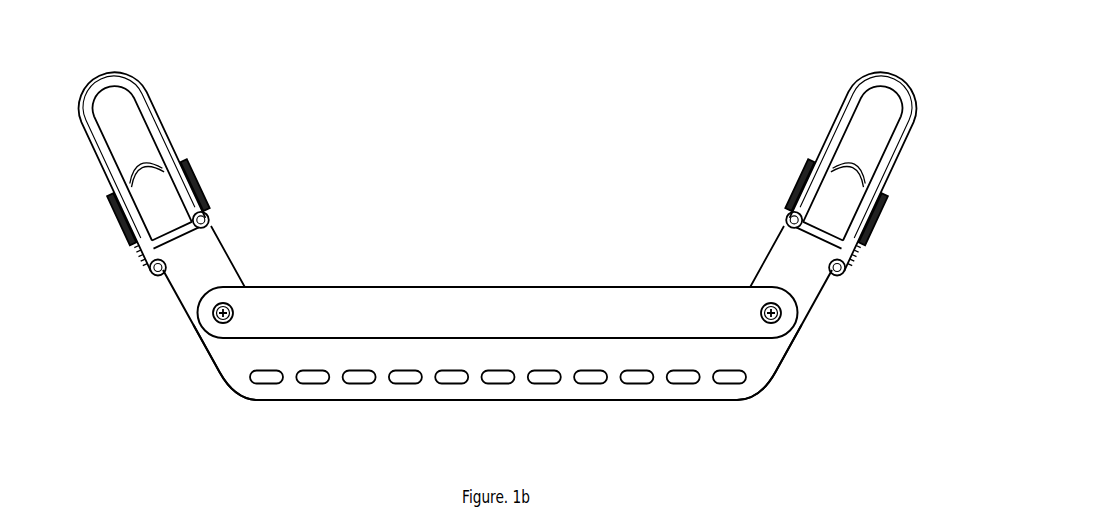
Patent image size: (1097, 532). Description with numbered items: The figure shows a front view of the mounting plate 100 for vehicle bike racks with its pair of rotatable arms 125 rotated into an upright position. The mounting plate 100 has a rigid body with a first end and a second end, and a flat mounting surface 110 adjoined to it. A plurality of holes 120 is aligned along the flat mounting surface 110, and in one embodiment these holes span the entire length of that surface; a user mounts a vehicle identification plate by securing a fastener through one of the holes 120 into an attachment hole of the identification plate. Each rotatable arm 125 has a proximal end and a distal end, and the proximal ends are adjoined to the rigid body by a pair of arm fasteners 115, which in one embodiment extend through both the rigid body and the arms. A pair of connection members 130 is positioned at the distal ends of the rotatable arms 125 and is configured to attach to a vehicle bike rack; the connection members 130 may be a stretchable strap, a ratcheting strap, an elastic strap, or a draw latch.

The mounting plate 100 is at (494, 66).
The flat mounting surface 110 is at (222, 352).
The arm fasteners 115 is at (782, 325).
The plurality of holes 120 is at (704, 392).
The pair of rotatable arms 125 is at (207, 262).
The pair of connection members 130 is at (81, 76).